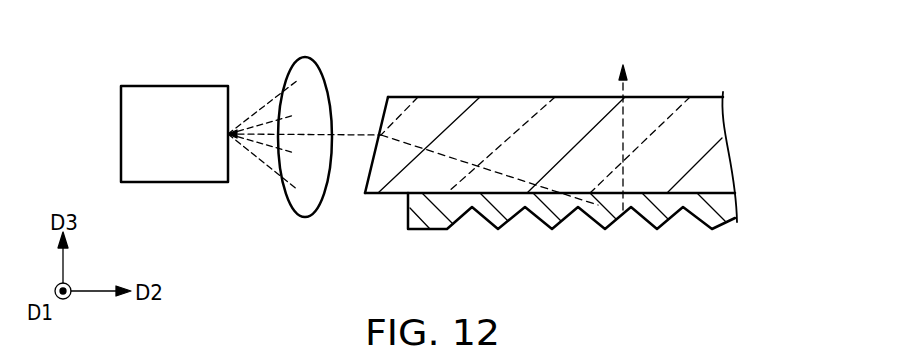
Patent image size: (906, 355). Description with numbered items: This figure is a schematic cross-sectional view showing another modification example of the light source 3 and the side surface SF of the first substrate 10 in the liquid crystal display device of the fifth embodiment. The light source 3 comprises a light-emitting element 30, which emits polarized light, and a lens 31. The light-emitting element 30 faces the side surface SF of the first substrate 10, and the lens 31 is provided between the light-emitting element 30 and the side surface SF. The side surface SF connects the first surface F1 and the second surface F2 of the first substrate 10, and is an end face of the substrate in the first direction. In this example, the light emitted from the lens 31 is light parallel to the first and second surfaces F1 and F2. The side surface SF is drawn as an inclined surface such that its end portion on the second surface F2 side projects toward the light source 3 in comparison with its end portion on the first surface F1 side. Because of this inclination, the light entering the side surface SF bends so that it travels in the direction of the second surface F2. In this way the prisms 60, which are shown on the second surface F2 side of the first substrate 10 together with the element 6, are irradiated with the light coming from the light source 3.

The light source 3 is at (98, 93).
The light-emitting element 30 is at (174, 95).
The lens 31 is at (298, 71).
The first substrate 10 is at (717, 166).
The prism sheet 6 is at (725, 203).
The prisms 60 is at (585, 222).
The side surface SF is at (376, 106).
The first surface F1 is at (669, 88).
The second surface F2 is at (696, 212).